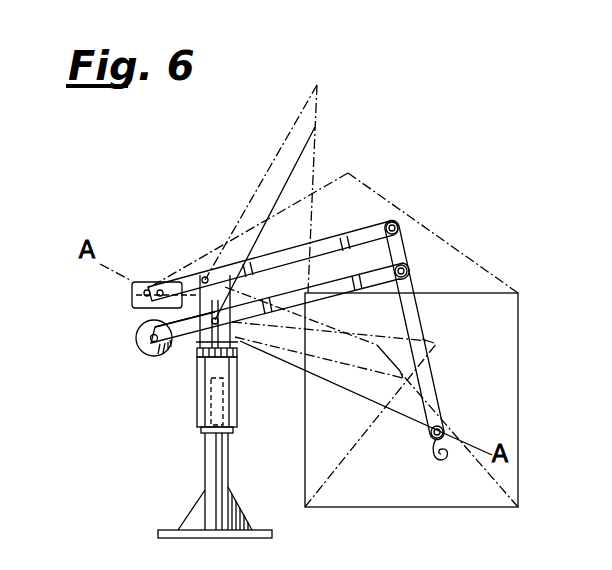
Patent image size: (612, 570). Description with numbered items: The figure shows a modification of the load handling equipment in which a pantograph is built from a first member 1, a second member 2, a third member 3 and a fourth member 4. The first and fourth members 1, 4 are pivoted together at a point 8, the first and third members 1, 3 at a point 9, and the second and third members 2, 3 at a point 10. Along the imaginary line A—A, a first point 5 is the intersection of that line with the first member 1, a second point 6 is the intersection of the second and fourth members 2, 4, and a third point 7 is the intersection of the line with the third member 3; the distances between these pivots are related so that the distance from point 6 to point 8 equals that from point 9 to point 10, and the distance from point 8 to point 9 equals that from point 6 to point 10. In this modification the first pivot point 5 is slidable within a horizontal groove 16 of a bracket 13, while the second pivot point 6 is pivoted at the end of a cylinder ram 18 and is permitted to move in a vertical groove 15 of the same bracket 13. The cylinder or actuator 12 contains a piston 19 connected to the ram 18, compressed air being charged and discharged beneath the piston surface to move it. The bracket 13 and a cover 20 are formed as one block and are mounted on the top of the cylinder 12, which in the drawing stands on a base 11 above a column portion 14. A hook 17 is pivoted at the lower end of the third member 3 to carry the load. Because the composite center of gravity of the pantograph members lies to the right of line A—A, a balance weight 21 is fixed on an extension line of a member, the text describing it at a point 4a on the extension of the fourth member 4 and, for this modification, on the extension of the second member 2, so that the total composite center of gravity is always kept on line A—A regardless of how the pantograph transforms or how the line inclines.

The first member 1 is at (270, 253).
The second member 2 is at (344, 278).
The third member 3 is at (424, 323).
The fourth member 4 is at (280, 303).
The point on extension line of fourth member 4a is at (158, 352).
The first point 5 is at (160, 290).
The second point 6 is at (219, 322).
The third point 7 is at (432, 433).
The pivot point of first and fourth members 8 is at (204, 277).
The pivot point of first and third members 9 is at (396, 226).
The pivot point of second and third members 10 is at (405, 270).
The base 11 is at (212, 477).
The cylinder 12 is at (238, 390).
The bracket 13 is at (131, 295).
The column 14 is at (203, 432).
The vertical groove 15 is at (232, 350).
The horizontal groove 16 is at (140, 300).
The hook 17 is at (433, 452).
The cylinder ram 18 is at (212, 390).
The piston 19 is at (203, 431).
The cover 20 is at (199, 353).
The balance weight 21 is at (140, 350).